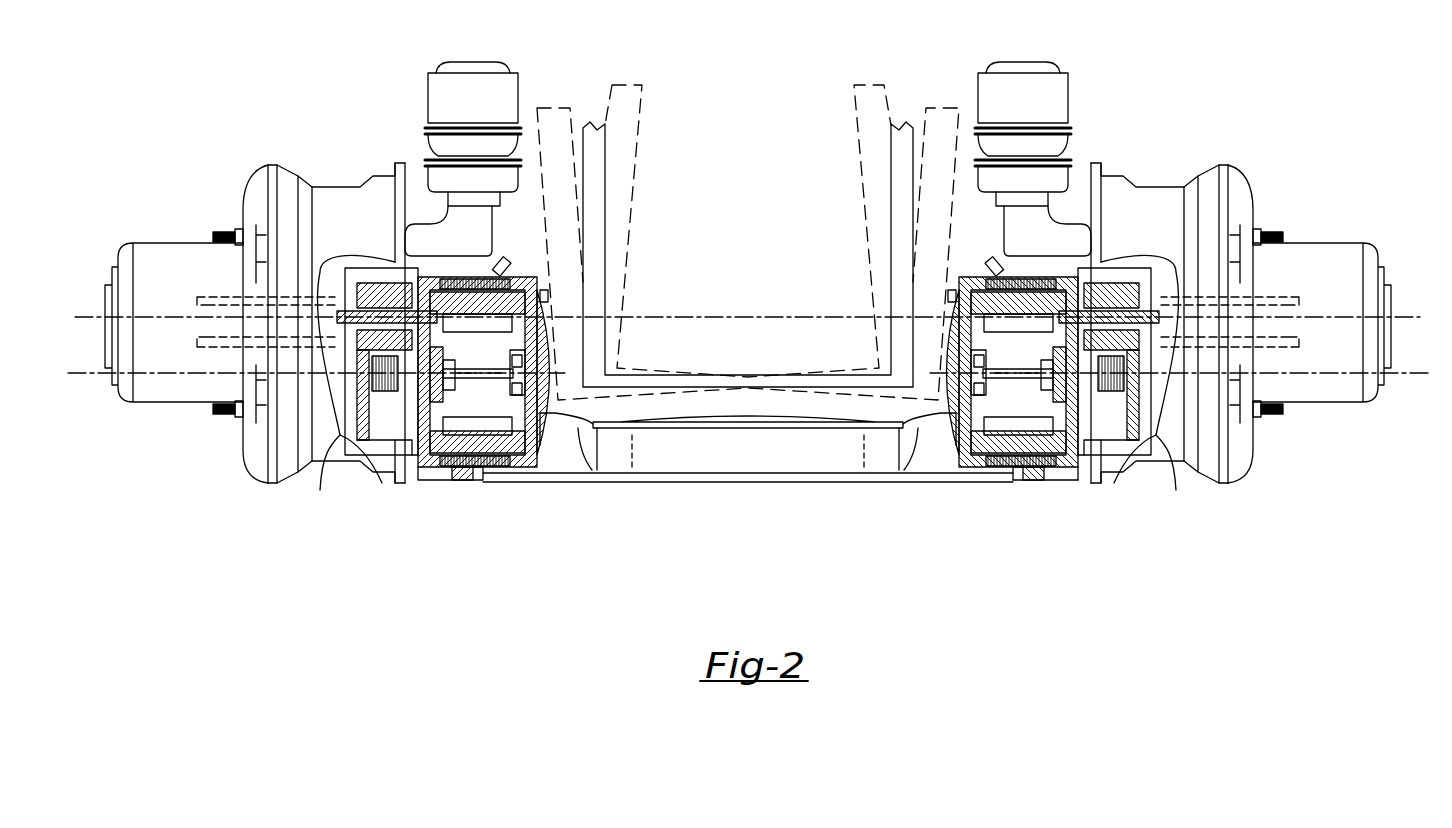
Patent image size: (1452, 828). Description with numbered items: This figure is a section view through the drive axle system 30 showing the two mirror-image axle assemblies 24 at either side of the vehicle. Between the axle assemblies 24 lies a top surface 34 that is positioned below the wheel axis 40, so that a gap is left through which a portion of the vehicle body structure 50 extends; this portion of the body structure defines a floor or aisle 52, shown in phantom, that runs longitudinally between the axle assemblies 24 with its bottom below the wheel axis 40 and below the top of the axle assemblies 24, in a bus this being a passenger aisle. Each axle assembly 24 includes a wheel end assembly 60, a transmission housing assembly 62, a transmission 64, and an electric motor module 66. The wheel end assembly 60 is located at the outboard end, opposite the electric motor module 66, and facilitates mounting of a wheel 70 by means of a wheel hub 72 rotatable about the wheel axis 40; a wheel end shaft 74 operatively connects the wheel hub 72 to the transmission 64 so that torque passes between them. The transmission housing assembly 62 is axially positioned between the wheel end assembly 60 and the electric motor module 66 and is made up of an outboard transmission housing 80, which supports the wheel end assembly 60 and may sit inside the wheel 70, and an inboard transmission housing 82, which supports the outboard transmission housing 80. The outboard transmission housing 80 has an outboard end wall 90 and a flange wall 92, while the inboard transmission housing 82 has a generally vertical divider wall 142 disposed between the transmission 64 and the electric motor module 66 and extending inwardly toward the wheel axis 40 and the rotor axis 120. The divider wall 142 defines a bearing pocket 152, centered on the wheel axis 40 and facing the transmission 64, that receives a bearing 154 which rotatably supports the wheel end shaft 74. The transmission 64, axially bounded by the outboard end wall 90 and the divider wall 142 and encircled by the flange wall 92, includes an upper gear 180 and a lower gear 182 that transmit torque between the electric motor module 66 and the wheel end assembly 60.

The axle assembly 24 is at (125, 188).
The axle housing 30 is at (685, 485).
The top surface 34 is at (652, 418).
The wheel axis 40 is at (80, 312).
The vehicle body structure 50 is at (750, 375).
The floor or aisle 52 is at (760, 226).
The wheel end assembly 60 is at (160, 425).
The transmission housing assembly 62 is at (366, 447).
The transmission 64 is at (389, 430).
The electric motor module 66 is at (549, 471).
The wheel 70 is at (269, 163).
The wheel hub 72 is at (253, 258).
The wheel end shaft 74 is at (338, 319).
The outboard transmission housing 80 is at (1143, 470).
The inboard transmission housing 82 is at (1032, 488).
The outboard end wall 90 is at (1158, 405).
The flange wall 92 is at (1130, 447).
The rotor axis 120 is at (81, 378).
The divider wall 142 is at (1062, 408).
The bearing pocket 152 is at (1072, 336).
The bearing 154 is at (1133, 395).
The upper gear 180 is at (345, 264).
The lower gear 182 is at (356, 446).